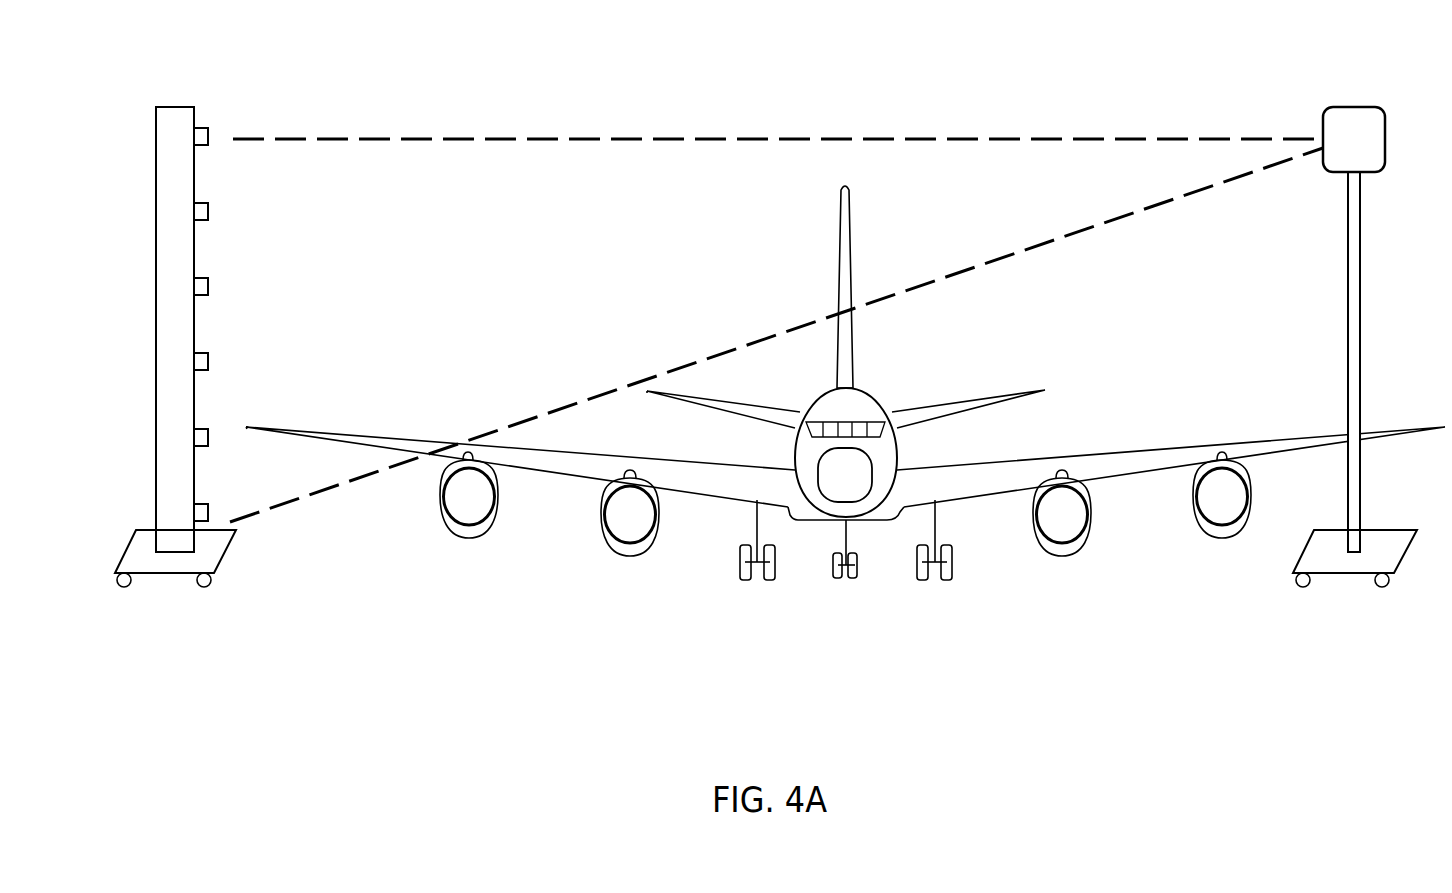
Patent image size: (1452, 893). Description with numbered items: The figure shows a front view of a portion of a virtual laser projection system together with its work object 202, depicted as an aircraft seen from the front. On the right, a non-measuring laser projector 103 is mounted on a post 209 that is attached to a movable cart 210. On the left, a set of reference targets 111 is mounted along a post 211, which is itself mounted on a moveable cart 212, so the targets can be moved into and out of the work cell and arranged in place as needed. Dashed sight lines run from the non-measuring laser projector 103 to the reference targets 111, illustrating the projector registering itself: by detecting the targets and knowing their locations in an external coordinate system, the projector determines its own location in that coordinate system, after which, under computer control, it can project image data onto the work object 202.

The non-measuring laser projector 103 is at (1323, 118).
The reference targets 111 is at (200, 360).
The work object 202 is at (870, 400).
The post 209 is at (1348, 367).
The movable cart 210 is at (1328, 568).
The post 211 is at (190, 119).
The moveable cart 212 is at (177, 575).